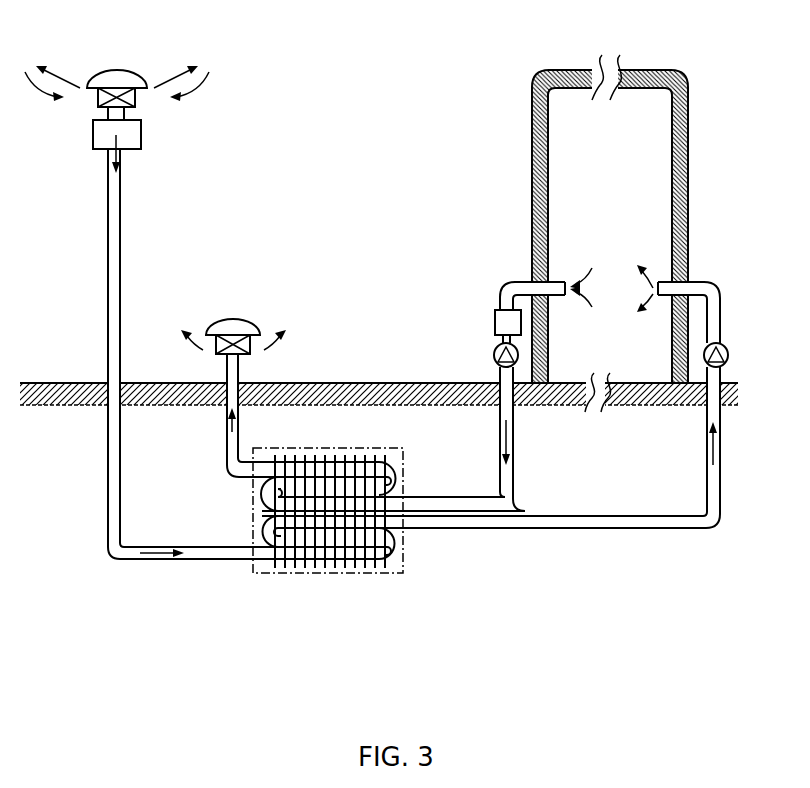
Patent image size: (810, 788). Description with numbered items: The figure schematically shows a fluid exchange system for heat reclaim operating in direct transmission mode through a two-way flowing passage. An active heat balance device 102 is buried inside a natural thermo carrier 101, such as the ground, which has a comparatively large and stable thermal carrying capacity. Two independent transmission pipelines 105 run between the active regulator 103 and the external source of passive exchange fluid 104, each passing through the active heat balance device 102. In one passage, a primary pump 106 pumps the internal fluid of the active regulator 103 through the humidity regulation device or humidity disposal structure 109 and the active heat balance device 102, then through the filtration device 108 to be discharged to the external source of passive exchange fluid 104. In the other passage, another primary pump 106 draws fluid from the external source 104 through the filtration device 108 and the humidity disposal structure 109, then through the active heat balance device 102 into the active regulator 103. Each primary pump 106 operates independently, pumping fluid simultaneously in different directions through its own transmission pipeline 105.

The natural thermo carrier 101 is at (383, 407).
The active heat balance device 102 is at (310, 575).
The active regulator 103 is at (643, 185).
The external source of passive exchange fluid 104 is at (28, 67).
The transmission pipeline 105 is at (108, 485).
The primary pump 106 is at (498, 347).
The filtration device 108 is at (122, 72).
The humidity regulation device or humidity disposal structure 109 is at (93, 137).